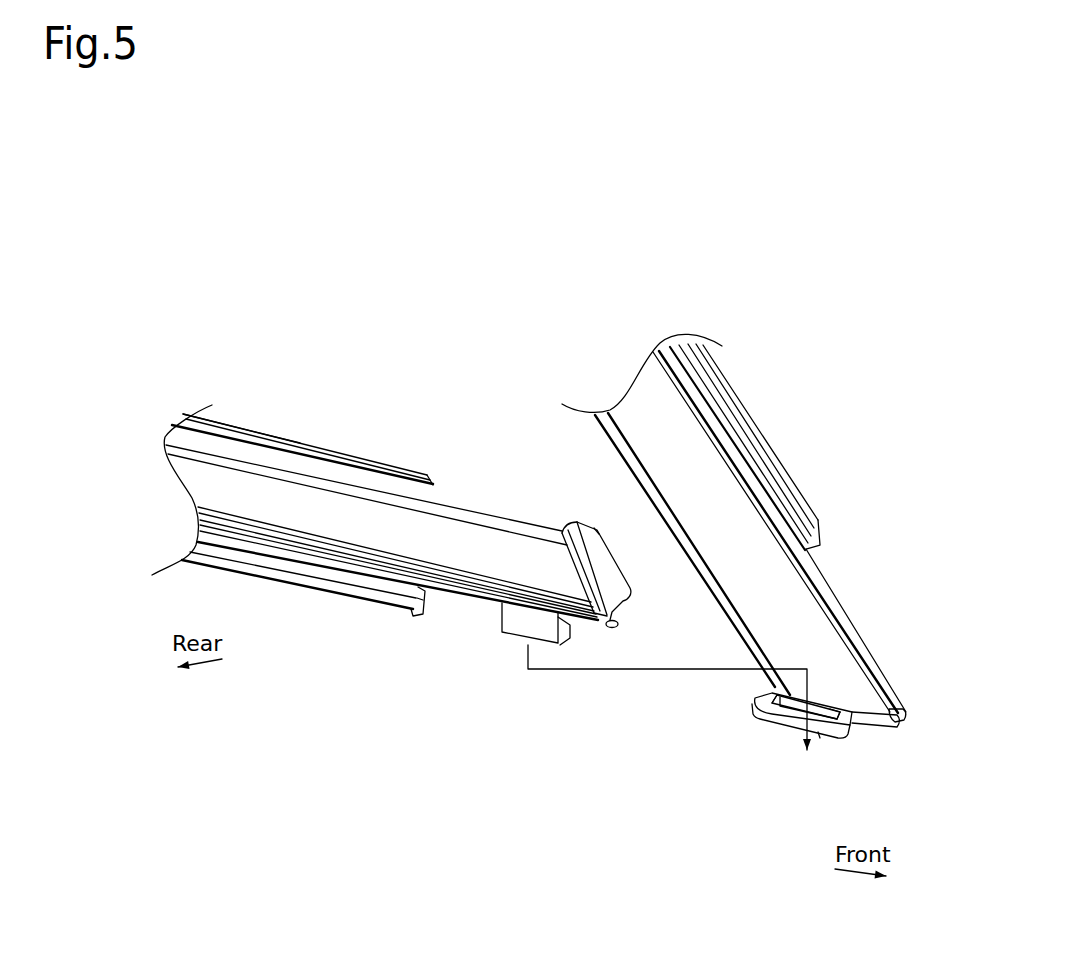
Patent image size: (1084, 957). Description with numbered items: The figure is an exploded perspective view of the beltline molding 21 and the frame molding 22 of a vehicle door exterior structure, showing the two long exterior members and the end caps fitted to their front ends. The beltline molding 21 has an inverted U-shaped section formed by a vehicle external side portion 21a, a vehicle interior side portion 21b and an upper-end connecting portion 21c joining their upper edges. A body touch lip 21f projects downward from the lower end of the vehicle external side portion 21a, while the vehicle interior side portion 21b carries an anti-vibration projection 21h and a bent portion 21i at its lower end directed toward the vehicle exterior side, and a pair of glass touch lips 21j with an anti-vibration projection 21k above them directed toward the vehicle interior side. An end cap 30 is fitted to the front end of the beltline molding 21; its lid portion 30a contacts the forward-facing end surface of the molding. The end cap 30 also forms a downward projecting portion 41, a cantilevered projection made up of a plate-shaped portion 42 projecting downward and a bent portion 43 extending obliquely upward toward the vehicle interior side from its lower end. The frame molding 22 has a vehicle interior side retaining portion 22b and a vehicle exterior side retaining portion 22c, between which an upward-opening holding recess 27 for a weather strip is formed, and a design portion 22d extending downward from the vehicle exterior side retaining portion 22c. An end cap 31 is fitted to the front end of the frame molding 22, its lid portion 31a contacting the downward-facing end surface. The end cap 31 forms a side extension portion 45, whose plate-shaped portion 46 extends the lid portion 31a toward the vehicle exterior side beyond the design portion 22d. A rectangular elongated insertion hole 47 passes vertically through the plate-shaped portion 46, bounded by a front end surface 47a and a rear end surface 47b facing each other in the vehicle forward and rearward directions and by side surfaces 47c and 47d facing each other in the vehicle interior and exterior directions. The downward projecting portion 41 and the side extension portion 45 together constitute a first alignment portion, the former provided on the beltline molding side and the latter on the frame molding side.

The beltline molding 21 is at (375, 539).
The vehicle external side portion 21a is at (497, 553).
The vehicle interior side portion 21b is at (400, 587).
The upper-end connecting portion 21c is at (453, 500).
The body touch lip 21f is at (450, 588).
The anti-vibration projection 21h is at (297, 562).
The bent portion 21i is at (357, 593).
The glass touch lips 21j is at (340, 450).
The anti-vibration projection 21k is at (266, 444).
The frame molding 22 is at (762, 528).
The vehicle interior side retaining portion 22b is at (819, 516).
The vehicle exterior side retaining portion 22c is at (712, 422).
The design portion 22d is at (790, 588).
The holding recess 27 is at (792, 488).
The end cap 30 is at (625, 551).
The lid portion 30a is at (603, 567).
The end cap 31 is at (910, 715).
The lid portion 31a is at (886, 718).
The downward projecting portion 41 is at (544, 673).
The plate-shaped portion 42 is at (500, 618).
The bent portion 43 is at (568, 637).
The side extension portion 45 is at (813, 703).
The plate-shaped portion 46 is at (842, 738).
The insertion hole 47 is at (813, 673).
The front end surface 47a is at (840, 704).
The rear end surface 47b is at (771, 696).
The side surface 47c is at (781, 707).
The side surface 47d is at (828, 703).